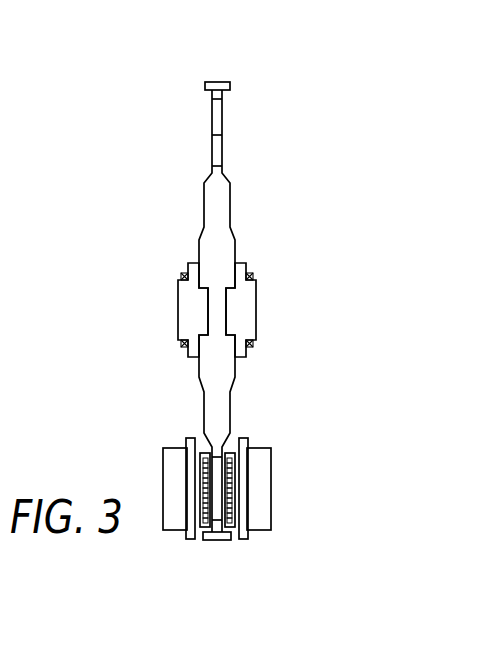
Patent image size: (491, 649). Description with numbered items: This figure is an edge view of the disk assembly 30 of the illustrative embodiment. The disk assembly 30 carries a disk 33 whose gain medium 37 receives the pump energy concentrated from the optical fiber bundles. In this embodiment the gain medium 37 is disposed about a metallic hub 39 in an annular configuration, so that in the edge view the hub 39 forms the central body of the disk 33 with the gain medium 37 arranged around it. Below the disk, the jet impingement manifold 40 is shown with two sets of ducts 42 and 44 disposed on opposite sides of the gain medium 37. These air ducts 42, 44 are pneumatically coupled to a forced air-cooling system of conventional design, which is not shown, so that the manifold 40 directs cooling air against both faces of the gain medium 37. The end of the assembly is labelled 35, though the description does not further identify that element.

The disk assembly 30 is at (271, 278).
The disk 33 is at (222, 167).
The shaft tip / end cap 35 is at (230, 86).
The gain medium 37 is at (222, 135).
The metallic hub 39 is at (256, 310).
The jet impingement manifold 40 is at (220, 508).
The ducts 42 is at (201, 453).
The ducts 44 is at (232, 453).